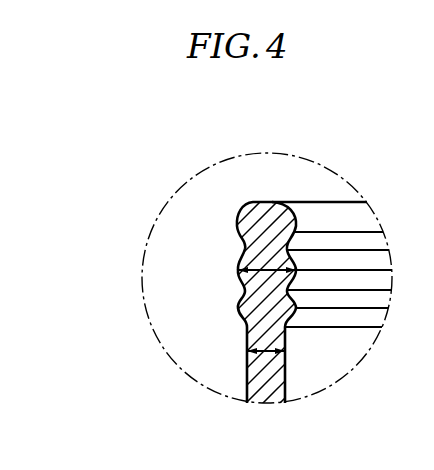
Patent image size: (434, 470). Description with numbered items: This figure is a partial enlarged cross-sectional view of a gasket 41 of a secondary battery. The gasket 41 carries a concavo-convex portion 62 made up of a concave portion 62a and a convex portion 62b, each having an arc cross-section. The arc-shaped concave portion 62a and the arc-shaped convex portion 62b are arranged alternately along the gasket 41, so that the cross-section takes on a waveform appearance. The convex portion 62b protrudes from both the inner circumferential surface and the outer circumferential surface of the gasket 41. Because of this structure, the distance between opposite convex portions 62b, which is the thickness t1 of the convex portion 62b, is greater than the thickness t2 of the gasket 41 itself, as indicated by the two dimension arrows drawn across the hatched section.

The concavo-convex portion 62 is at (53, 241).
The concave portion 62a is at (243, 250).
The convex portion 62b is at (238, 270).
The gasket 41 is at (247, 383).
The thickness of the convex portion t1 is at (268, 268).
The thickness of the gasket t2 is at (264, 350).